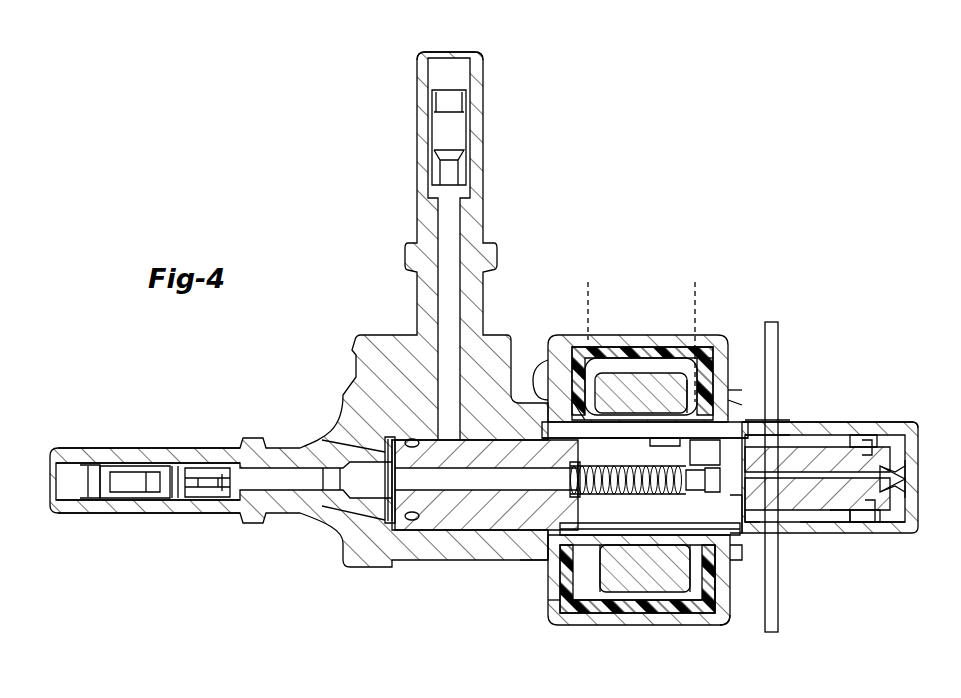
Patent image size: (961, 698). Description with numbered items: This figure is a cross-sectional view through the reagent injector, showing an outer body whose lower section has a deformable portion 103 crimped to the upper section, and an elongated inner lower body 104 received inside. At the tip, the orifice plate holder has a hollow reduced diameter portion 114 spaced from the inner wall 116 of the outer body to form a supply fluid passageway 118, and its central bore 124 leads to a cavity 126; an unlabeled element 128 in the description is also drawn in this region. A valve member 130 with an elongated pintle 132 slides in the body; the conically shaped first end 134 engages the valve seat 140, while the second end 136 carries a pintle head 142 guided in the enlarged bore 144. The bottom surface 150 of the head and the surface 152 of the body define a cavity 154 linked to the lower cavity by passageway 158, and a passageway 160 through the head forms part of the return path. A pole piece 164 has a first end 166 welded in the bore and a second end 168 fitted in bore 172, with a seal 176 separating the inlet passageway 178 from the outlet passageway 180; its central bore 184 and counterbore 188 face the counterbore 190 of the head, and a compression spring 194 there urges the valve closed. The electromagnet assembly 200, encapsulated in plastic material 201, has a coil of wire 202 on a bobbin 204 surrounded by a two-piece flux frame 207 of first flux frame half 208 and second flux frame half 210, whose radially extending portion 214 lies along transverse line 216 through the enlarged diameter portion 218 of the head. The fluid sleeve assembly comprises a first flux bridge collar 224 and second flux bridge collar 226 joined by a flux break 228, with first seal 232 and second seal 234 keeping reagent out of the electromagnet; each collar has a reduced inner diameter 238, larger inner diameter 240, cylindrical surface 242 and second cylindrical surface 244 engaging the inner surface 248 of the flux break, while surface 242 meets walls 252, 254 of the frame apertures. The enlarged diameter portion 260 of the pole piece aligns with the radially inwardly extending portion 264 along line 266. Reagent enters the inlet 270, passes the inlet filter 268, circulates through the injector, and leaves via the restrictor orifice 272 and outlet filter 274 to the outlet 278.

The deformable portion 103 is at (553, 352).
The inner lower body 104 is at (820, 522).
The reduced diameter portion 114 is at (865, 440).
The inner wall 116 is at (880, 425).
The supply fluid passageway 118 is at (871, 438).
The central bore 124 is at (905, 480).
The cavity 126 is at (868, 515).
The seal 128 is at (870, 522).
The valve member 130 is at (760, 523).
The pintle 132 is at (835, 524).
The conically shaped first end 134 is at (900, 470).
The second end 136 is at (722, 558).
The valve seat 140 is at (900, 495).
The pintle head 142 is at (678, 428).
The enlarged bore 144 is at (655, 443).
The bottom surface 150 is at (790, 490).
The surface 152 is at (760, 460).
The cavity 154 is at (742, 525).
The passageway 158 is at (845, 512).
The passageway 160 is at (700, 492).
The pole piece 164 is at (485, 520).
The first end 166 is at (635, 560).
The second end 168 is at (383, 540).
The bore 172 is at (386, 442).
The seal 176 is at (411, 440).
The inlet passageway 178 is at (452, 243).
The outlet passageway 180 is at (245, 448).
The central bore 184 is at (422, 520).
The counterbore 188 is at (576, 495).
The counterbore 190 is at (645, 494).
The compression spring 194 is at (572, 478).
The electromagnet assembly 200 is at (578, 625).
The plastic material 201 is at (616, 614).
The coil of wire 202 is at (644, 612).
The bobbin 204 is at (625, 580).
The two-piece flux frame 207 is at (627, 345).
The first flux frame half 208 is at (560, 610).
The second flux frame half 210 is at (715, 623).
The radially extending portion 214 is at (720, 380).
The transverse line 216 is at (695, 282).
The enlarged diameter portion 218 is at (688, 548).
The first flux bridge collar 224 is at (772, 390).
The second flux bridge collar 226 is at (575, 415).
The flux break 228 is at (636, 413).
The first seal 232 is at (538, 560).
The second seal 234 is at (735, 565).
The first reduced inner diameter 238 is at (703, 462).
The second larger inner diameter 240 is at (775, 433).
The cylindrical surface 242 is at (772, 418).
The second cylindrical surface 244 is at (697, 352).
The inner surface 248 is at (620, 439).
The wall 252 is at (730, 400).
The wall 254 is at (590, 439).
The enlarged diameter portion 260 is at (550, 545).
The radially inwardly extending portion 264 is at (546, 372).
The line 266 is at (588, 282).
The inlet filter 268 is at (448, 137).
The inlet 270 is at (470, 58).
The restrictor orifice 272 is at (215, 492).
The outlet filter 274 is at (120, 493).
The outlet 278 is at (92, 470).